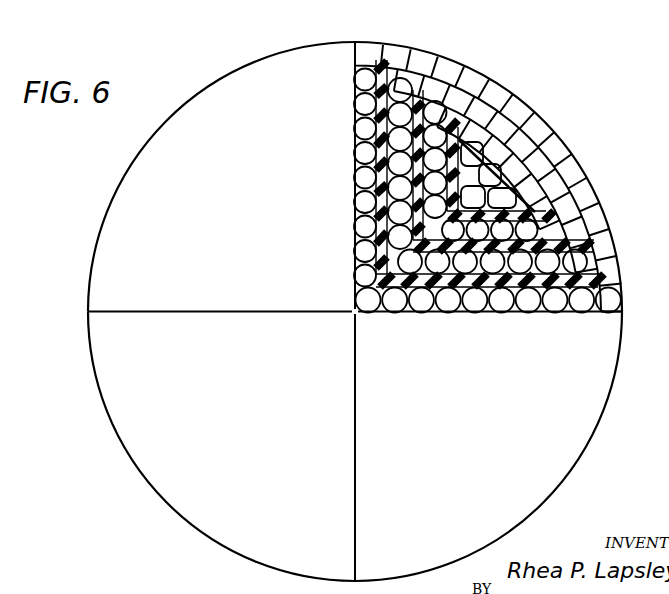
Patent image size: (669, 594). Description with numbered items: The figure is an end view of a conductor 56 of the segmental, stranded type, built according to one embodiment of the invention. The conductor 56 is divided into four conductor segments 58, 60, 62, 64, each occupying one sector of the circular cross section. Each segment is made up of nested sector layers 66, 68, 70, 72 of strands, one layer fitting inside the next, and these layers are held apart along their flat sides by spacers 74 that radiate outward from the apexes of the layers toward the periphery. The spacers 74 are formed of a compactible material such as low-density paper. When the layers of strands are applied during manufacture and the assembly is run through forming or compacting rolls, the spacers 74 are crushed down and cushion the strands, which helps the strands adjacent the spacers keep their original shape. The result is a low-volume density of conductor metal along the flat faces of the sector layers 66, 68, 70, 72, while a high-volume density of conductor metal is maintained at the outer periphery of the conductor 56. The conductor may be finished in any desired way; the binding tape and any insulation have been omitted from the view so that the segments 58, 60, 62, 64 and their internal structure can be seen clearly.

The conductor 56 is at (333, 39).
The conductor segment 58 is at (210, 84).
The conductor segment 60 is at (561, 128).
The conductor segment 62 is at (624, 345).
The conductor segment 64 is at (90, 366).
The sector layer 66 is at (362, 90).
The sector layer 68 is at (393, 118).
The sector layer 70 is at (423, 137).
The sector layer 72 is at (457, 163).
The spacer 74 is at (465, 200).